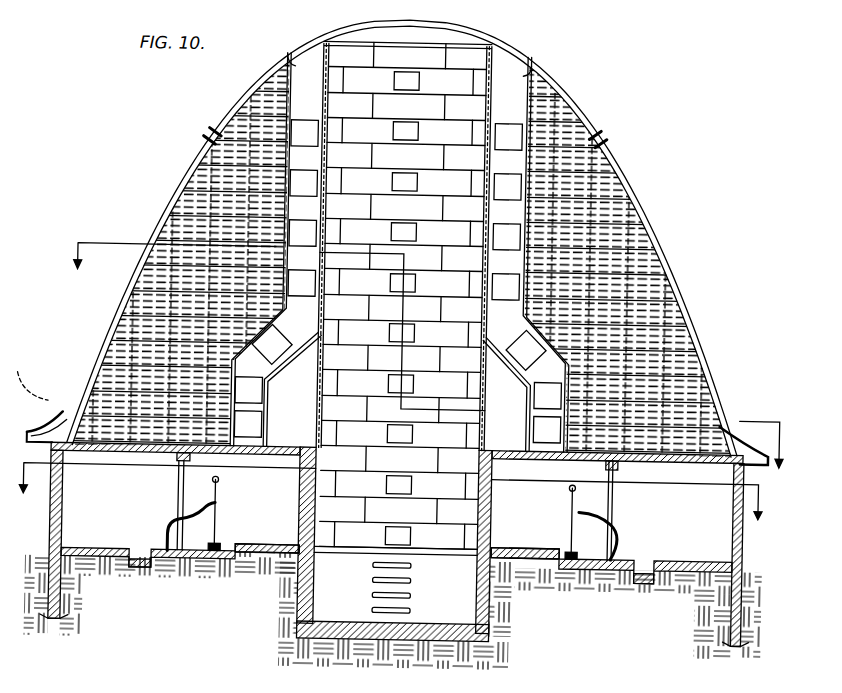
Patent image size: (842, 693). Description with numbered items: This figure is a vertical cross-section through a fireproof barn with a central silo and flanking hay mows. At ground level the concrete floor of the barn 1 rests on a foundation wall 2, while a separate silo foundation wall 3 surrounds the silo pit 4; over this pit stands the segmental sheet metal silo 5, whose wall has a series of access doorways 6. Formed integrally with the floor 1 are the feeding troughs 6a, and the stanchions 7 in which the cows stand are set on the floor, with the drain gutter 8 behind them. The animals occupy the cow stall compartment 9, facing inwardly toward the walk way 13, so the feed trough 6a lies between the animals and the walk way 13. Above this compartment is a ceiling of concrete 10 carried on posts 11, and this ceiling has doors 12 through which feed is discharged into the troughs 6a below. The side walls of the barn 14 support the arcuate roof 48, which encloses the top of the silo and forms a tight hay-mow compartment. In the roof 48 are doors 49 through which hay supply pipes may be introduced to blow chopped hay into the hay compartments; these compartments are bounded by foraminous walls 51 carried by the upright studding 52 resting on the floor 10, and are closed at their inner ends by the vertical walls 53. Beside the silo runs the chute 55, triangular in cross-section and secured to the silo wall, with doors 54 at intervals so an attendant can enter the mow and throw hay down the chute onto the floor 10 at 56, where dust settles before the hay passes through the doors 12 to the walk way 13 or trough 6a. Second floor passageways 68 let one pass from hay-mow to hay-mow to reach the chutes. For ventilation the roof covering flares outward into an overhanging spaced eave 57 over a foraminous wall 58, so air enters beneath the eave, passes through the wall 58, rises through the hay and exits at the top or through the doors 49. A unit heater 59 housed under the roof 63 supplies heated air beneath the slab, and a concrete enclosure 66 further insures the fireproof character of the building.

The floor of the barn 1 is at (86, 554).
The foundation wall 2 is at (50, 595).
The silo foundation wall 3 is at (495, 606).
The silo pit 4 is at (467, 584).
The segmental sheet metal silo 5 is at (489, 430).
The access doorways 6 is at (417, 131).
The feeding troughs 6a is at (232, 547).
The stanchions 7 is at (170, 525).
The drain gutter 8 is at (145, 559).
The cow stall compartment 9 is at (699, 505).
The ceiling of concrete 10 is at (660, 458).
The posts 11 is at (629, 489).
The doors 12 is at (248, 457).
The walk way 13 is at (283, 545).
The side walls of the barn 14 is at (66, 531).
The arcuate roof 48 is at (79, 389).
The doors 49 is at (207, 134).
The foraminous walls 51 is at (636, 245).
The upright studding 52 is at (641, 212).
The vertical walls 53 is at (293, 58).
The doors 54 is at (302, 148).
The chute 55 is at (300, 112).
The hay landing place on floor 56 is at (299, 440).
The overhanging spaced eave 57 is at (64, 417).
The foraminous wall 58 is at (46, 449).
The unit heaters 59 is at (754, 417).
The roof 63 is at (33, 376).
The concrete enclosure 66 is at (492, 488).
The second floor passageways 68 is at (307, 414).